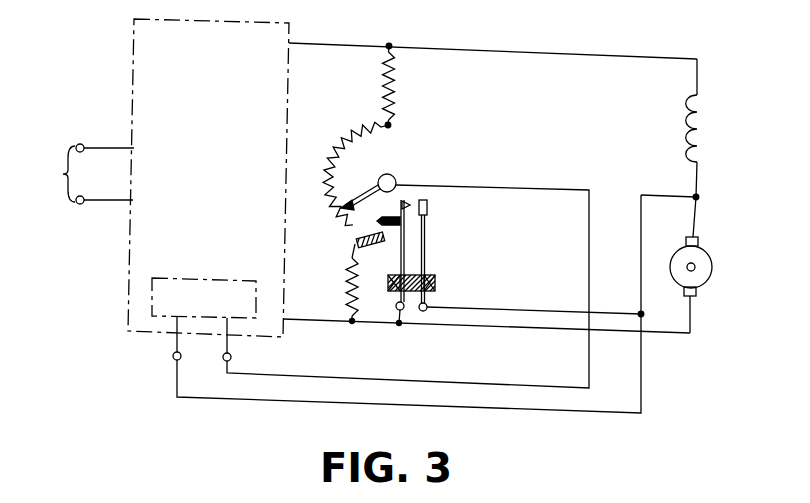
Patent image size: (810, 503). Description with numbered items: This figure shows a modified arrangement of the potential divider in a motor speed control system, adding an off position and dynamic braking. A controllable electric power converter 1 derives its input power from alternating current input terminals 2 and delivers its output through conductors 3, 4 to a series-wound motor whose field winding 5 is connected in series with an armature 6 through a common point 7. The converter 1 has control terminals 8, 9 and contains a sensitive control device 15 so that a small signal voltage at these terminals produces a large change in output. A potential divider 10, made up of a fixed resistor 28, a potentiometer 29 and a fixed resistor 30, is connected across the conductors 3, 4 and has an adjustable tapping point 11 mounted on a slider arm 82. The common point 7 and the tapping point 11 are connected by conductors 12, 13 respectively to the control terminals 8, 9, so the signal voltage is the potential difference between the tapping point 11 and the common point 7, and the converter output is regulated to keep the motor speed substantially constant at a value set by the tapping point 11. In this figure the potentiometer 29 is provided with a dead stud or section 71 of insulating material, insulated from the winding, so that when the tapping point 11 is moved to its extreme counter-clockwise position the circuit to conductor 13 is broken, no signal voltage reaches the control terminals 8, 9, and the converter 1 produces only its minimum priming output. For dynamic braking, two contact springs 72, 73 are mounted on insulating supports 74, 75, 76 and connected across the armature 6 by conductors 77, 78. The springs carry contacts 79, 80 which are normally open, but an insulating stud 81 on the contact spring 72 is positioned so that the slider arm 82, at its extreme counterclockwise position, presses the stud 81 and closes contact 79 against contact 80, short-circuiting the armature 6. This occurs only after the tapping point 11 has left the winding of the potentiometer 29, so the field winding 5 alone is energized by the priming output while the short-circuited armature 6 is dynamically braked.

The controllable electric power converter 1 is at (233, 22).
The alternating current input terminals 2 is at (90, 174).
The conductor 3 is at (362, 45).
The conductor 4 is at (339, 323).
The field winding 5 is at (702, 126).
The armature 6 is at (712, 267).
The common point 7 is at (699, 197).
The control terminal 8 is at (172, 356).
The control terminal 9 is at (232, 357).
The potential divider 10 is at (413, 153).
The tapping point 11 is at (346, 202).
The conductor 12 is at (378, 411).
The conductor 13 is at (411, 383).
The sensitive control device 15 is at (217, 278).
The fixed resistor 28 is at (348, 285).
The potentiometer 29 is at (339, 153).
The fixed resistor 30 is at (384, 91).
The dead stud or section 71 is at (363, 246).
The contact spring 72 is at (406, 241).
The contact spring 73 is at (426, 257).
The insulating support 74 is at (388, 282).
The insulating support 75 is at (409, 292).
The insulating support 76 is at (437, 284).
The conductor 77 is at (396, 308).
The conductor 78 is at (526, 308).
The contact 79 is at (402, 205).
The contact 80 is at (428, 203).
The insulating stud 81 is at (378, 221).
The slider arm 82 is at (380, 176).